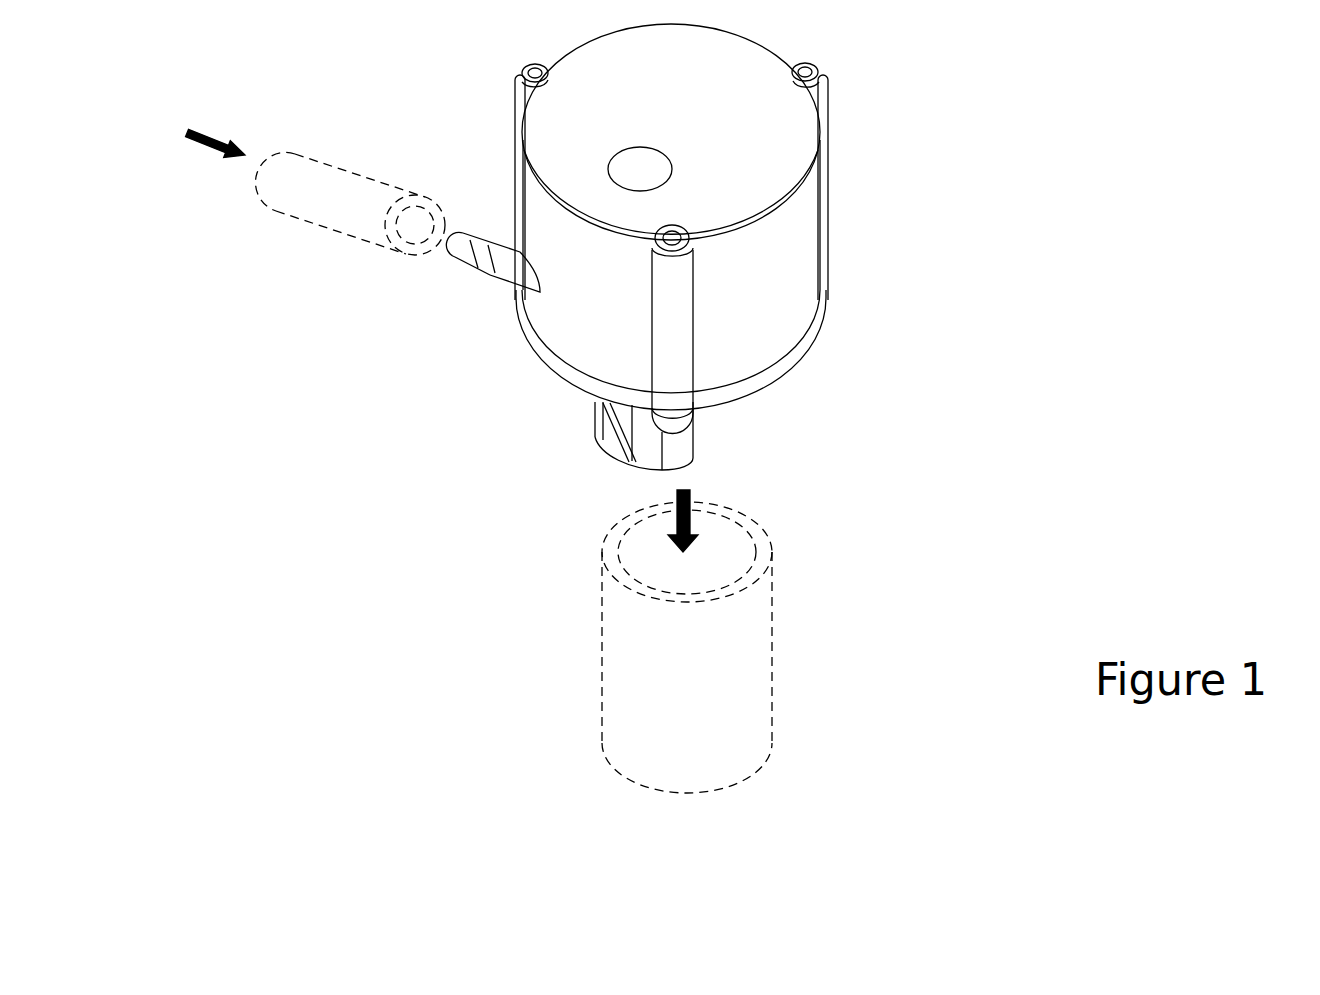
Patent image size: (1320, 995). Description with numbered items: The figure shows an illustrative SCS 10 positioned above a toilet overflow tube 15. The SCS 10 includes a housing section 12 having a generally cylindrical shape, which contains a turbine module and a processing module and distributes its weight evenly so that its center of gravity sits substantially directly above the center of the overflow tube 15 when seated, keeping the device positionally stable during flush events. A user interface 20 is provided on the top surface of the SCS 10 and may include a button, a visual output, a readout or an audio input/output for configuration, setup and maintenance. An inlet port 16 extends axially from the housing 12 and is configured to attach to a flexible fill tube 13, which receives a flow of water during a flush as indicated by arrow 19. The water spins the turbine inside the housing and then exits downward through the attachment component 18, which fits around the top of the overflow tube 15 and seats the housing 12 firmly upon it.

The SCS 10 is at (975, 237).
The housing section 12 is at (757, 306).
The flexible fill tube 13 is at (352, 233).
The overflow tube 15 is at (698, 672).
The inlet port 16 is at (498, 273).
The attachment component 18 is at (585, 461).
The arrow 19 is at (203, 160).
The user interface 20 is at (647, 147).